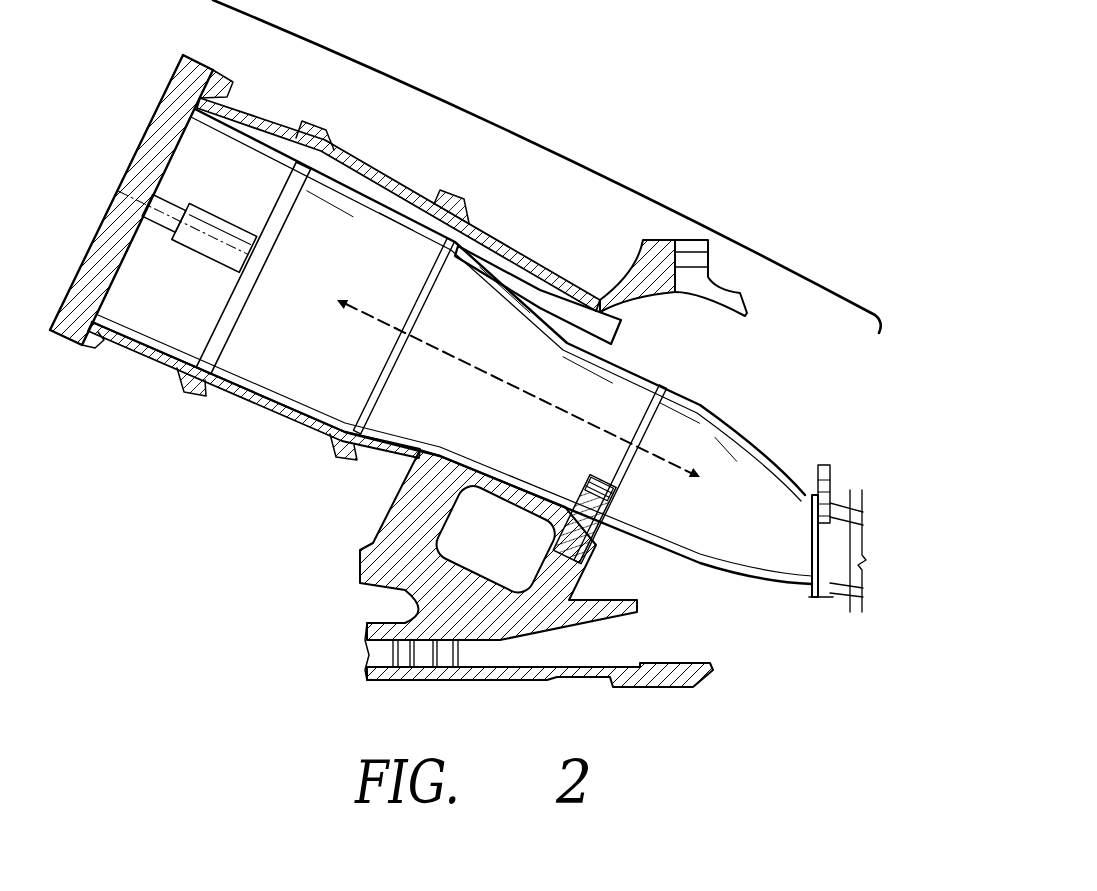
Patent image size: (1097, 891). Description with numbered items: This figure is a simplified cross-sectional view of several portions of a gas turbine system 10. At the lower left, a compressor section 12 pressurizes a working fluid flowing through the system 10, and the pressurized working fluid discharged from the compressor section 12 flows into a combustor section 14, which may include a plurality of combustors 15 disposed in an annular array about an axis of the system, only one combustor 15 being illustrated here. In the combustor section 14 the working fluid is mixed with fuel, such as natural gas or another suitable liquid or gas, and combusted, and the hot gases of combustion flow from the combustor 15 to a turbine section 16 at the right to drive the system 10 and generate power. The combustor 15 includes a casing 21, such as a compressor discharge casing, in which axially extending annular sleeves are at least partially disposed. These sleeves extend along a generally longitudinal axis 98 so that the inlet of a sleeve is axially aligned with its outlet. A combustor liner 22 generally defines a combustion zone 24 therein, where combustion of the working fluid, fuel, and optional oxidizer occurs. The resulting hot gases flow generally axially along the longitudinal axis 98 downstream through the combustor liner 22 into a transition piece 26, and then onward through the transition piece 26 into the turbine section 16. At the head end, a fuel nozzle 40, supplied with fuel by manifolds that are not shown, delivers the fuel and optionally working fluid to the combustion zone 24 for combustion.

The gas turbine system 10 is at (793, 182).
The compressor section 12 is at (338, 648).
The combustor section 14 is at (586, 170).
The combustor 15 is at (411, 178).
The turbine section 16 is at (872, 498).
The casing 21 is at (95, 349).
The combustor liner 22 is at (393, 222).
The combustion zone 24 is at (327, 347).
The transition piece 26 is at (770, 478).
The fuel nozzle 40 is at (176, 238).
The longitudinal axis 98 is at (488, 374).